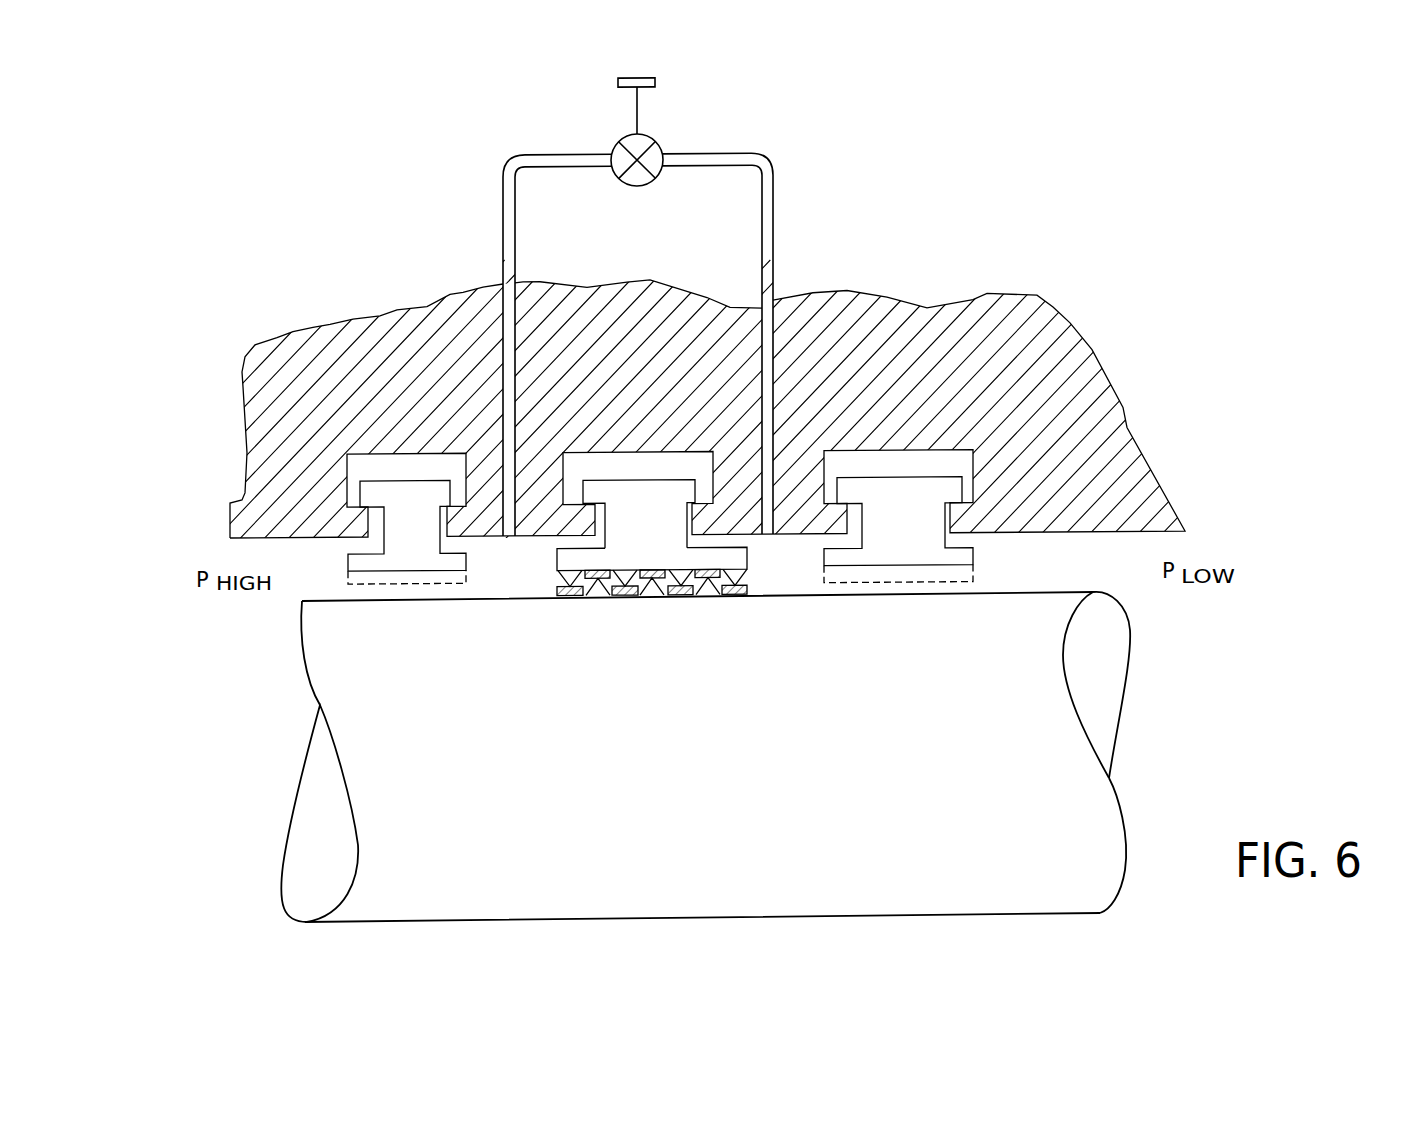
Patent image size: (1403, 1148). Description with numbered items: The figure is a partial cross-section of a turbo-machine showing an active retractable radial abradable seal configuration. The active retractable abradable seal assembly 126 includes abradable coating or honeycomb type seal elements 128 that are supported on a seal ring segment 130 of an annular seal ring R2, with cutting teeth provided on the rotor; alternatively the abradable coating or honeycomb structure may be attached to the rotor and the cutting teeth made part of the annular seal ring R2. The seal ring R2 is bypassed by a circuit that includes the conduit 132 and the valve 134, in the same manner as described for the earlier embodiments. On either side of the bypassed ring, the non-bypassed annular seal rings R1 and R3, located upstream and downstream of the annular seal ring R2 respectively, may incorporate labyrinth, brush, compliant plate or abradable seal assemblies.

The active retractable abradable seal assembly 126 is at (537, 550).
The abradable coating or honeycomb type seal elements 128 is at (752, 575).
The seal ring segment 130 is at (648, 538).
The conduit 132 is at (511, 199).
The valve 134 is at (622, 152).
The annular seal ring R1 is at (407, 532).
The annular seal ring R2 is at (644, 585).
The annular seal ring R3 is at (898, 530).